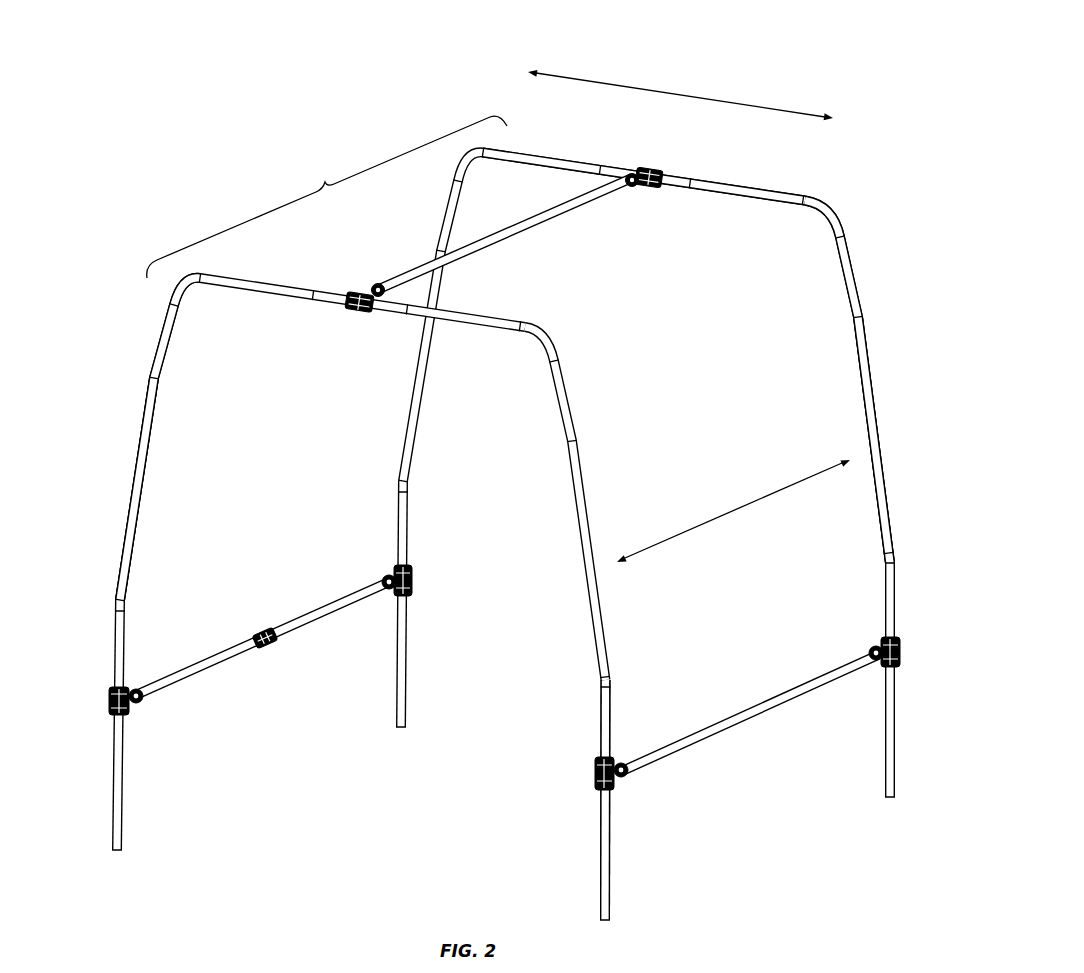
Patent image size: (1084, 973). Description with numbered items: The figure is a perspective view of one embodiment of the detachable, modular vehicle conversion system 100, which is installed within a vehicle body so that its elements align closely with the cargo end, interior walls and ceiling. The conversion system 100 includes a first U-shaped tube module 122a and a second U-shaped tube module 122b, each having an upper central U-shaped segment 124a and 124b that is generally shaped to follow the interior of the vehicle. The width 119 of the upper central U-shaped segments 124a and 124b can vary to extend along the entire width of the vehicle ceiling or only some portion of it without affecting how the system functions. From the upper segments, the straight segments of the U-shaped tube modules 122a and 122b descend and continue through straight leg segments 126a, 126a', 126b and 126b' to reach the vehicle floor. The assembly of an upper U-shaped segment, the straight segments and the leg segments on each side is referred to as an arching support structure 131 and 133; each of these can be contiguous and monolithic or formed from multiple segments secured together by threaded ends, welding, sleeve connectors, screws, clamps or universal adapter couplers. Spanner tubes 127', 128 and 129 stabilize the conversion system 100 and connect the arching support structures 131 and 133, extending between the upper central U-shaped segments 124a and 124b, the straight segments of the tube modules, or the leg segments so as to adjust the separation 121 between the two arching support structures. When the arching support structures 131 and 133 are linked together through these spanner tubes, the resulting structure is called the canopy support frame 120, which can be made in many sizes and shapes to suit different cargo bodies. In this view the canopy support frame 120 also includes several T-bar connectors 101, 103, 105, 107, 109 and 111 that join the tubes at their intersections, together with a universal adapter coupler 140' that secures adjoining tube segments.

The conversion system 100 is at (878, 206).
The T-bar connector 101 is at (900, 653).
The T-bar connector 103 is at (593, 778).
The T-bar connector 105 is at (643, 165).
The T-bar connector 107 is at (362, 288).
The T-bar connector 109 is at (108, 696).
The T-bar connector 111 is at (415, 576).
The width 119 is at (672, 93).
The canopy support frame 120 is at (327, 197).
The separation 121 is at (737, 509).
The first U-shaped tube module 122a is at (891, 430).
The second U-shaped tube module 122b is at (569, 594).
The upper central U-shaped segment 124a is at (752, 175).
The upper central U-shaped segment 124b is at (485, 300).
The straight leg segment 126a is at (854, 680).
The straight leg segment 126a' is at (443, 604).
The straight leg segment 126b is at (334, 649).
The straight leg segment 126b' is at (156, 725).
The spanner tube 127' is at (263, 649).
The spanner tube 128 is at (606, 210).
The spanner tube 129 is at (750, 712).
The arching support structure 131 is at (102, 553).
The arching support structure 133 is at (904, 512).
The universal adapter coupler 140' is at (280, 659).